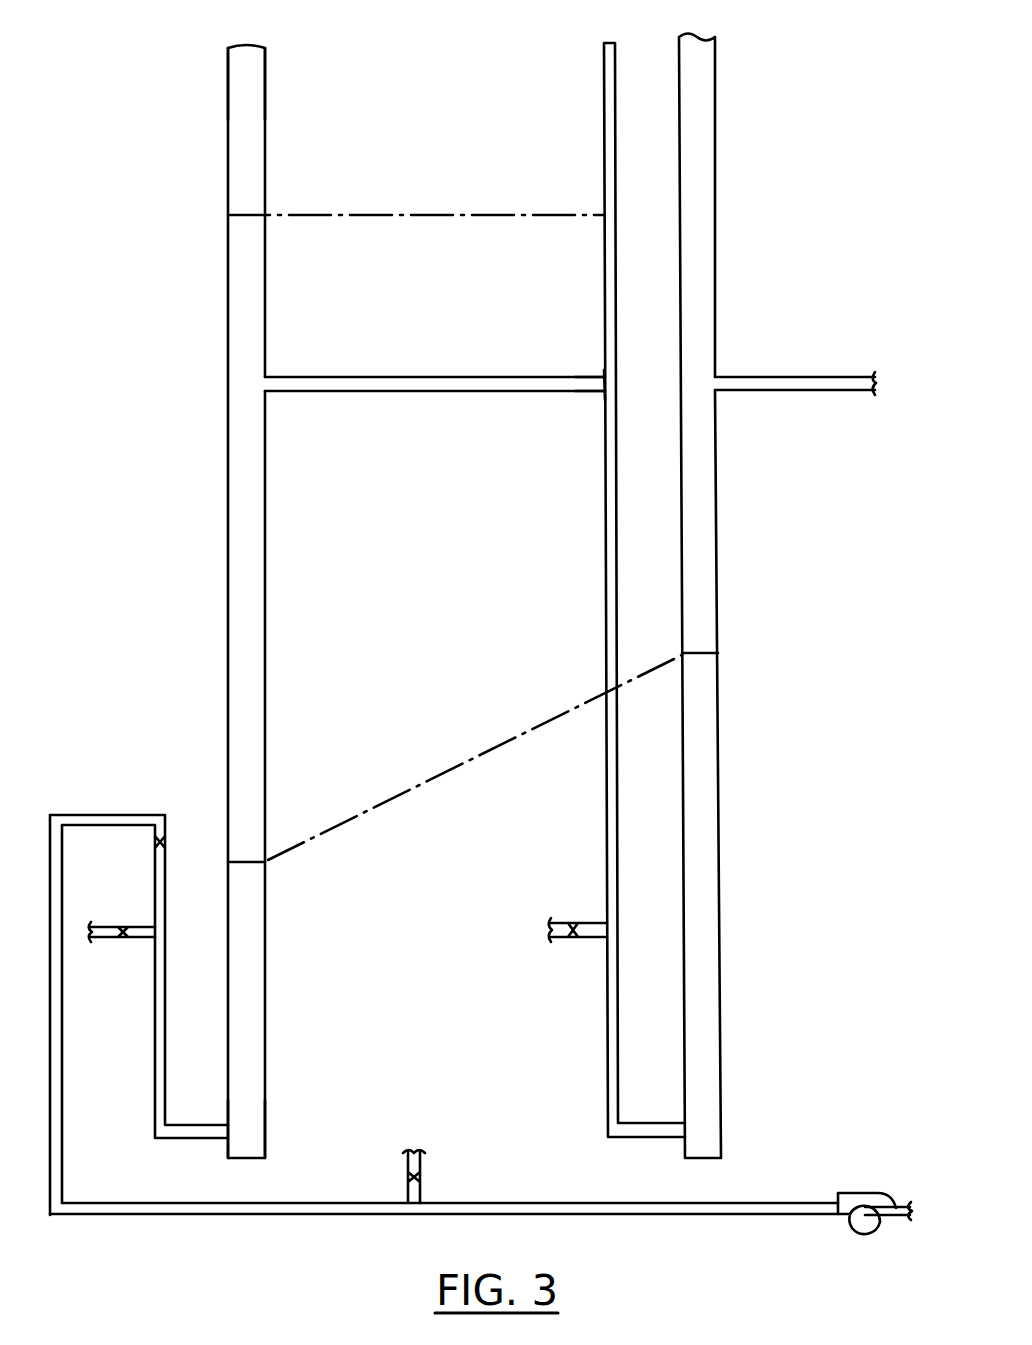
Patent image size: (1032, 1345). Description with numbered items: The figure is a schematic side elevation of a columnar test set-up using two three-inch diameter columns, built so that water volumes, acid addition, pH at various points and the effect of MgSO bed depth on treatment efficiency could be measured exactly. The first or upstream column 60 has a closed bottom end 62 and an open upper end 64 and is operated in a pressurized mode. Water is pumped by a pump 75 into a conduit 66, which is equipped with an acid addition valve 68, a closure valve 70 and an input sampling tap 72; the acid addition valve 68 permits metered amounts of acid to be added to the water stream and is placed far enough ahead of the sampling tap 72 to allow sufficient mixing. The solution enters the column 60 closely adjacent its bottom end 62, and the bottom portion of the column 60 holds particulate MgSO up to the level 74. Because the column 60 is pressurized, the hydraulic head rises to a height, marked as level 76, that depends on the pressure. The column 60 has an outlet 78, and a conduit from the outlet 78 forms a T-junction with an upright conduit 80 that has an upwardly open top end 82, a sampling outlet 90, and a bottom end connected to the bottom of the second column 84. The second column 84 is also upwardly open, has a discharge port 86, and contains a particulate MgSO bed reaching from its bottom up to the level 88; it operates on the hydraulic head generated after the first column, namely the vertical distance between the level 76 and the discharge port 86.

The first column 60 is at (268, 962).
The closed bottom end 62 is at (250, 1160).
The open upper end 64 is at (242, 46).
The conduit 66 is at (545, 1203).
The acid addition valve 68 is at (425, 1180).
The closure valve 70 is at (165, 842).
The input sampling tap 72 is at (122, 927).
The level of particulate MgSO 74 is at (272, 862).
The pump 75 is at (858, 1192).
The hydraulic head level 76 is at (228, 215).
The outlet 78 is at (283, 392).
The upright conduit 80 is at (606, 423).
The open top end 82 is at (606, 42).
The second column 84 is at (718, 610).
The discharge port 86 is at (745, 377).
The level of particulate bed 88 is at (728, 653).
The sampling outlet 90 is at (585, 923).